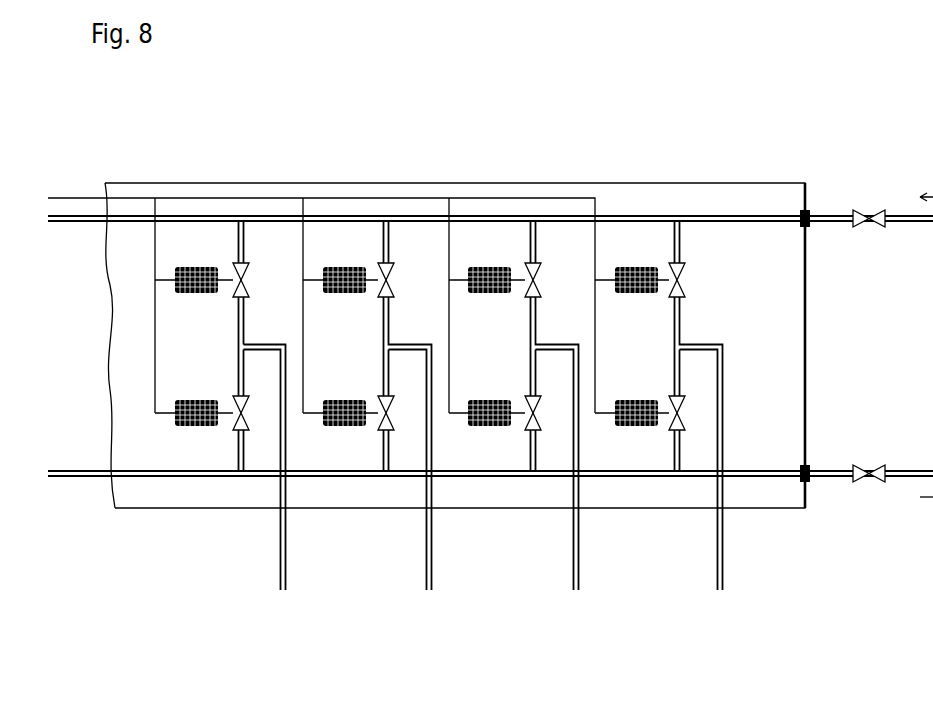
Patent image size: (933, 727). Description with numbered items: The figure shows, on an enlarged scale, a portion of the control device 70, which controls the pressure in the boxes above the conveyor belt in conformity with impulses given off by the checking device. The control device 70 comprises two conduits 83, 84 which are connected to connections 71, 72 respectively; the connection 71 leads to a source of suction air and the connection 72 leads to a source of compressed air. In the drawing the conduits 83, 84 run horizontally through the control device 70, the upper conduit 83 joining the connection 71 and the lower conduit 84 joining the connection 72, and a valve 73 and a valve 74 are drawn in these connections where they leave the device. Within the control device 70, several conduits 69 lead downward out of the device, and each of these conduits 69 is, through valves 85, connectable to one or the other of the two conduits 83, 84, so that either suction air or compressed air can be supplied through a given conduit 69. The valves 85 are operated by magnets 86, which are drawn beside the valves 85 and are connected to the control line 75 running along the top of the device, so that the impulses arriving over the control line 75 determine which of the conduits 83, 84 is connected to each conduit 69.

The conduit 69 is at (279, 541).
The control device 70 is at (512, 185).
The connection 71 is at (832, 213).
The connection 72 is at (837, 478).
The supply shut-off valve 73 is at (878, 209).
The return shut-off valve 74 is at (880, 483).
The control line 75 is at (362, 198).
The conduit 83 is at (232, 215).
The conduit 84 is at (402, 473).
The valve 85 is at (394, 282).
The magnet 86 is at (355, 294).